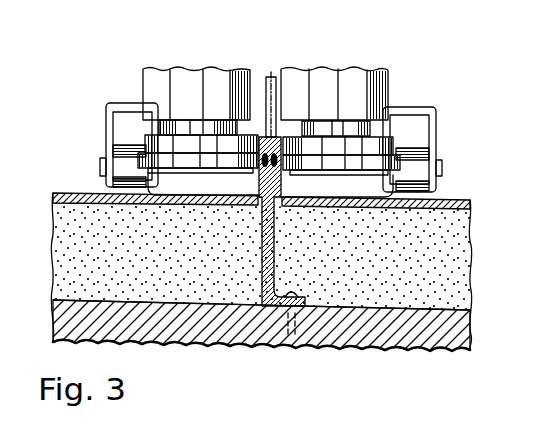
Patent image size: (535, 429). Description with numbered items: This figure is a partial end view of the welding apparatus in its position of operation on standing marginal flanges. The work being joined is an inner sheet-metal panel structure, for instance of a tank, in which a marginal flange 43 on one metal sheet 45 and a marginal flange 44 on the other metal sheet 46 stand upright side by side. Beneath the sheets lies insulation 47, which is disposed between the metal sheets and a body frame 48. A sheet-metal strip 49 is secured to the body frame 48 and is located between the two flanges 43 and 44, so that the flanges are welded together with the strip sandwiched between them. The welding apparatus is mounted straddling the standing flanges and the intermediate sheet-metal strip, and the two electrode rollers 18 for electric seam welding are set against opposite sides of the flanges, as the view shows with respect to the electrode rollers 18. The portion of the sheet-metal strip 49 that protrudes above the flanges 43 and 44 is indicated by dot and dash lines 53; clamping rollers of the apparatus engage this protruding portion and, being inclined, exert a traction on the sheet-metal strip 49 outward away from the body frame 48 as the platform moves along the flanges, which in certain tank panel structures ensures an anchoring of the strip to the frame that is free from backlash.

The electrode roller 18 is at (424, 116).
The marginal flange 43 is at (282, 178).
The marginal flange 44 is at (258, 179).
The metal sheet 45 is at (453, 205).
The metal sheet 46 is at (70, 193).
The insulation 47 is at (448, 277).
The body frame 48 is at (448, 332).
The sheet-metal strip 49 is at (263, 292).
The dot and dash lines 53 is at (271, 74).